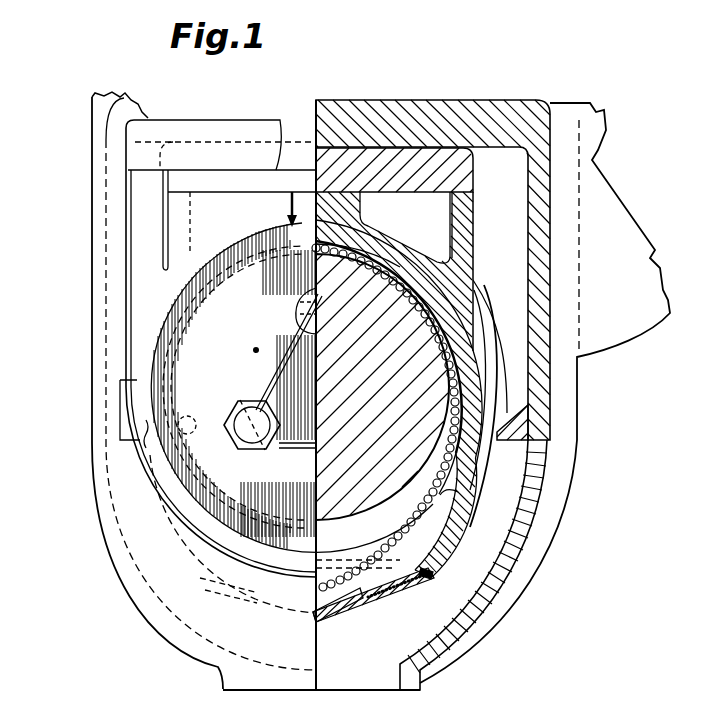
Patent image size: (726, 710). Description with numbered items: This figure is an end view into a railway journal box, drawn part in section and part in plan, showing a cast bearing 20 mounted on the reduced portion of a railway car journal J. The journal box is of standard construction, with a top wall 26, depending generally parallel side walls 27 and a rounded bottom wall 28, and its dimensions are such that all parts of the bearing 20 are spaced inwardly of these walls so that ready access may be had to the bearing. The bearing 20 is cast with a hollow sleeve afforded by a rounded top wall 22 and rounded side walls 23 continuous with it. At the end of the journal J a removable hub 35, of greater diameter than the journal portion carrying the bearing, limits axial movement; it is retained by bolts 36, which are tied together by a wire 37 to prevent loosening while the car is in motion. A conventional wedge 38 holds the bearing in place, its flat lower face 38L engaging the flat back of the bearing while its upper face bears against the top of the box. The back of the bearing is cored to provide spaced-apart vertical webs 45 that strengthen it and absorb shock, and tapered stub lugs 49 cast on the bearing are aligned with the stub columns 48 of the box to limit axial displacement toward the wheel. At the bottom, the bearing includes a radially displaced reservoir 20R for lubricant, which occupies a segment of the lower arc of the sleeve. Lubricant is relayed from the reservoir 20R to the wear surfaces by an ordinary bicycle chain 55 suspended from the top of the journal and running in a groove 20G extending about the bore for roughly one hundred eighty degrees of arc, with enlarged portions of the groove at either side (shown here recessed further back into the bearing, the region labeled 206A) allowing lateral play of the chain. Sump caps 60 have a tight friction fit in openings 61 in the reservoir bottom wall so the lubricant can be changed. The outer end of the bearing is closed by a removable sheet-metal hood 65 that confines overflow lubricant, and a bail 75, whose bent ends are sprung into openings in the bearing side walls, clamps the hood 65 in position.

The top wall 26 is at (405, 115).
The rounded bottom wall 28 is at (466, 628).
The wedge 38 is at (440, 177).
The vertical webs 45 is at (474, 226).
The flat lower face 38L is at (405, 227).
The rounded top wall 22 is at (378, 242).
The groove 20G is at (394, 258).
The journal J is at (382, 387).
The bearing 20 is at (488, 472).
The rounded side walls 23 is at (480, 358).
The side walls 27 is at (540, 426).
The reservoir 20R is at (447, 538).
The ring lobe 206A is at (478, 482).
The openings 61 is at (424, 568).
The caps 60 is at (410, 600).
The bicycle chain 55 is at (337, 614).
The bail 75 is at (148, 484).
The stub columns 48 is at (148, 197).
The stub lugs 49 is at (150, 286).
The hood 65 is at (293, 212).
The hub 35 is at (292, 481).
The wire 37 is at (272, 346).
The bolts 36 is at (240, 424).